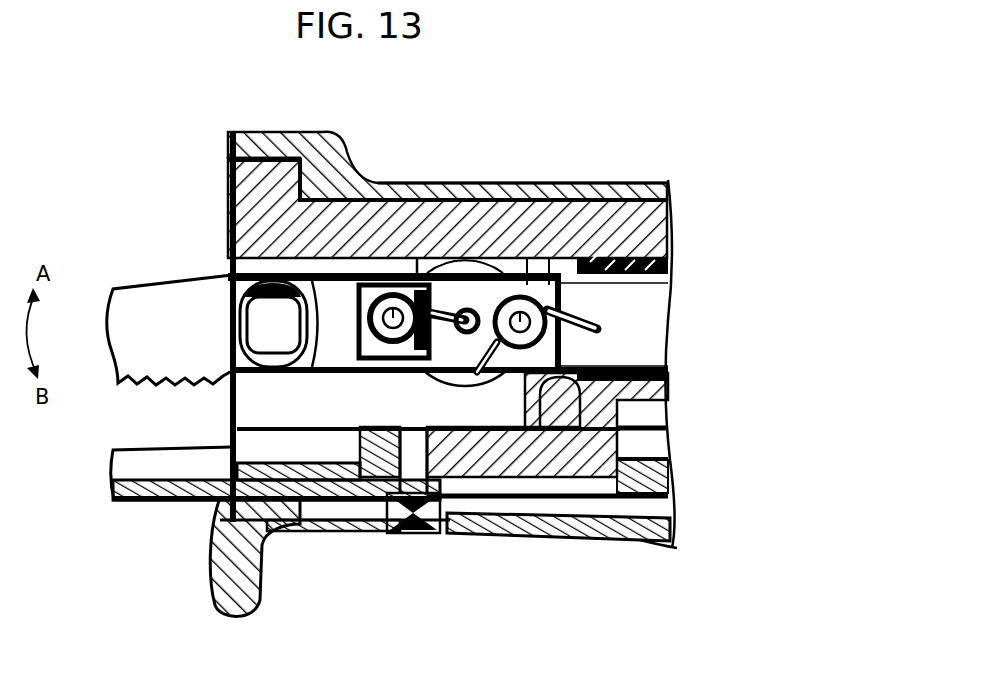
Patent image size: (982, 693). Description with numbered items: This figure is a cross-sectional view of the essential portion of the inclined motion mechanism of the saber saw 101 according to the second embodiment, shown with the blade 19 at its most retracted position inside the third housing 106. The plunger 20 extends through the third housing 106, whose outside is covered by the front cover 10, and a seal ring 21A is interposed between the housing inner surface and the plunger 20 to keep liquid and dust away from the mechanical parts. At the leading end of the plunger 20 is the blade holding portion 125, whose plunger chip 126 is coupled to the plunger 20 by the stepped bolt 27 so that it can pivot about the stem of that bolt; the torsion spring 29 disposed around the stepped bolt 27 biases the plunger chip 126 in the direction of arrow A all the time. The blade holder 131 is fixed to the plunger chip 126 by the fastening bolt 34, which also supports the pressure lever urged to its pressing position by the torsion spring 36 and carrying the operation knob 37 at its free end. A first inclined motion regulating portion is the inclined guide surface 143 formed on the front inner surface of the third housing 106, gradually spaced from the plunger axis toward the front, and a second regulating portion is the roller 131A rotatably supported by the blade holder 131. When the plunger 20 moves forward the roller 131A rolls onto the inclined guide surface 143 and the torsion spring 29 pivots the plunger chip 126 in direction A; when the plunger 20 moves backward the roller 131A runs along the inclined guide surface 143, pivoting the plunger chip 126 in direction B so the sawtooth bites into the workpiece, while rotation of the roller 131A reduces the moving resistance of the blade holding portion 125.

The front cover 10 is at (640, 186).
The blade 19 is at (118, 328).
The plunger 20 is at (633, 337).
The seal ring 21A is at (610, 258).
The stepped bolt 27 is at (521, 312).
The torsion spring 29 is at (580, 311).
The fastening bolt 34 is at (391, 332).
The torsion spring 36 is at (447, 326).
The operation knob 37 is at (273, 338).
The saber saw 101 is at (633, 592).
The third housing 106 is at (440, 258).
The blade holding portion 125 is at (323, 392).
The plunger chip 126 is at (533, 352).
The blade holder 131 is at (417, 268).
The roller 131A is at (470, 262).
The inclined guide surface 143 is at (232, 258).